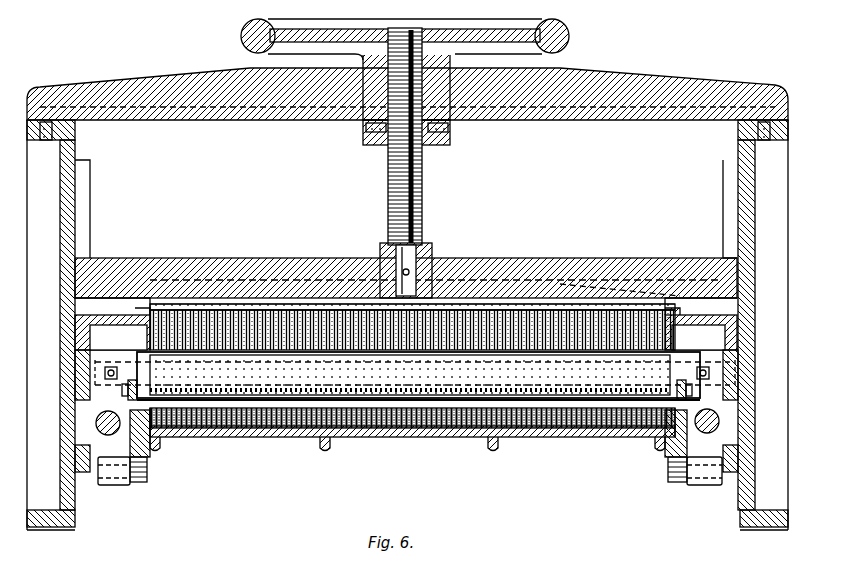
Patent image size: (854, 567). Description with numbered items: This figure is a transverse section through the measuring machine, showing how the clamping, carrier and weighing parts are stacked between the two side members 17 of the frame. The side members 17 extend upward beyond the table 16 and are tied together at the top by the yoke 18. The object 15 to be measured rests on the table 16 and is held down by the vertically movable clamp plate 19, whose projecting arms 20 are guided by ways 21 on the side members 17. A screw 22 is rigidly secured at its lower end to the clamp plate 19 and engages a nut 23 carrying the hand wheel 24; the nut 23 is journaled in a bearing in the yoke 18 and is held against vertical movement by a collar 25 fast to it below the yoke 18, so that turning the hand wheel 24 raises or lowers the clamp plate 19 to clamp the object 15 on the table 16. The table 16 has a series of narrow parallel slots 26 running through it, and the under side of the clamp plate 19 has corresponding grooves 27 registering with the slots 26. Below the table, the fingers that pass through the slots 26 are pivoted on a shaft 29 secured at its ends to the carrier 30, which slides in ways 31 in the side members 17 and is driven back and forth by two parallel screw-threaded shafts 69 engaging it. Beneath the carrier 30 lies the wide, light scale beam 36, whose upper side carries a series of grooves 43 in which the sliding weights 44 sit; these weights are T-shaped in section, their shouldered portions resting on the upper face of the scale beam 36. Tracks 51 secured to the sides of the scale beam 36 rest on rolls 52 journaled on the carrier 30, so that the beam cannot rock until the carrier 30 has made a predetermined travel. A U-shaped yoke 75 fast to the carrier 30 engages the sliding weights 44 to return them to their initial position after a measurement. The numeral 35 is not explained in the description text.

The object 15 is at (203, 312).
The table 16 is at (672, 310).
The side members 17 is at (75, 143).
The yoke 18 is at (660, 77).
The clamp plate 19 is at (606, 278).
The projecting arms 20 is at (118, 262).
The ways 21 is at (90, 210).
The screw 22 is at (424, 185).
The nut 23 is at (363, 115).
The hand wheel 24 is at (567, 30).
The collar 25 is at (450, 142).
The slots 26 is at (158, 340).
The grooves 27 is at (440, 300).
The shaft 29 is at (100, 373).
The carrier 30 is at (120, 486).
The ways 31 is at (80, 392).
The spring element 35 is at (392, 380).
The scale beam 36 is at (572, 438).
The grooves 43 is at (272, 436).
The sliding weights 44 is at (418, 430).
The tracks 51 is at (150, 450).
The rolls 52 is at (142, 480).
The screw-threaded shafts 69 is at (100, 422).
The U-shaped yoke 75 is at (122, 391).